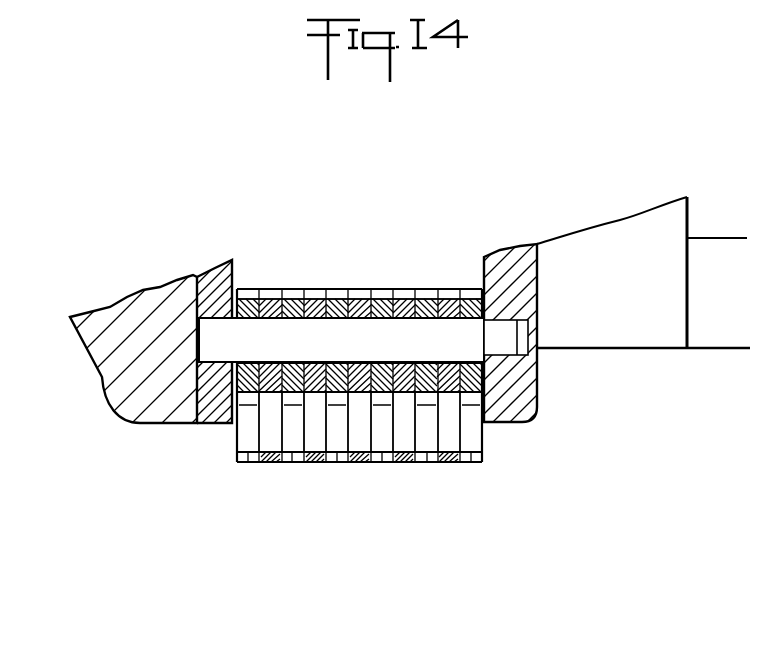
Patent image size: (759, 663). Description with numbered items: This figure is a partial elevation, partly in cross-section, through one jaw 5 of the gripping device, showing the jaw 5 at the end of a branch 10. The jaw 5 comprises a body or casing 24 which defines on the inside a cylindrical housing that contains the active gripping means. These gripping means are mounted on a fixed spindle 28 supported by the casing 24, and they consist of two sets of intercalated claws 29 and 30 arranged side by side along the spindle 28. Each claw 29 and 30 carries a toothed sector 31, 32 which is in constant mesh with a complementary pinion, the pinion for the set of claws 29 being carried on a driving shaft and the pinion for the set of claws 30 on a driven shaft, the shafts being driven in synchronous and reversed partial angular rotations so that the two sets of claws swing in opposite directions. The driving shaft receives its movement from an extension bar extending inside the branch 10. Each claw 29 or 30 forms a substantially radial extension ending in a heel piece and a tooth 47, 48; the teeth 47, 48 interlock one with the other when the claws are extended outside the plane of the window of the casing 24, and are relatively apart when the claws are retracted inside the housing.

The jaw 5 is at (121, 430).
The branch 10 is at (718, 251).
The casing 24 is at (91, 376).
The fixed spindle 28 is at (283, 338).
The claw 29 is at (361, 385).
The claw 30 is at (248, 439).
The toothed sector 31 is at (358, 292).
The toothed sector 32 is at (247, 296).
The tooth 47 is at (410, 461).
The tooth 48 is at (245, 463).